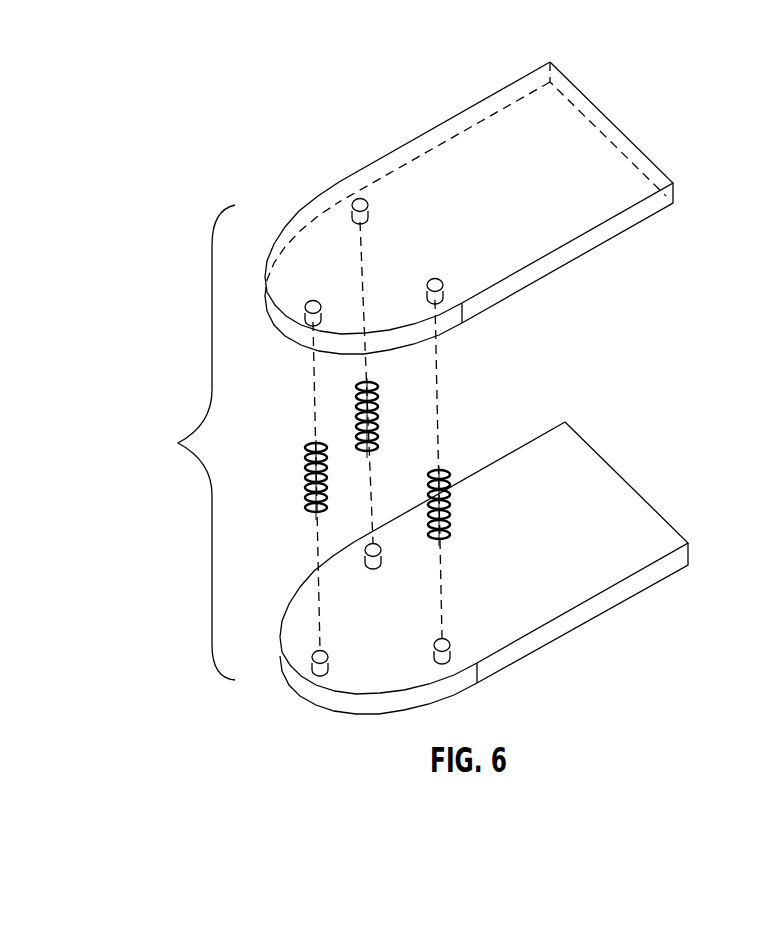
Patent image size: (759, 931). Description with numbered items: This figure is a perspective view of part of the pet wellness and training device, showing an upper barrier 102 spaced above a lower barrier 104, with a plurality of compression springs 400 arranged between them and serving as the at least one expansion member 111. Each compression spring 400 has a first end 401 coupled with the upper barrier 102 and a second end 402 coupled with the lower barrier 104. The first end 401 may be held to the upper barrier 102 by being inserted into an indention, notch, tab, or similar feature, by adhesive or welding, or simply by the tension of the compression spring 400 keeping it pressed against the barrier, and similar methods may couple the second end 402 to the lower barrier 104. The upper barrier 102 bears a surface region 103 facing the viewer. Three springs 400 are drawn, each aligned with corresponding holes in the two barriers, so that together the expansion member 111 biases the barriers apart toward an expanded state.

The upper barrier 102 is at (642, 146).
The plate surface 103 is at (536, 182).
The lower barrier 104 is at (647, 500).
The expansion member 111 is at (178, 443).
The compression spring 400 is at (378, 428).
The first end 401 is at (355, 388).
The second end 402 is at (378, 448).